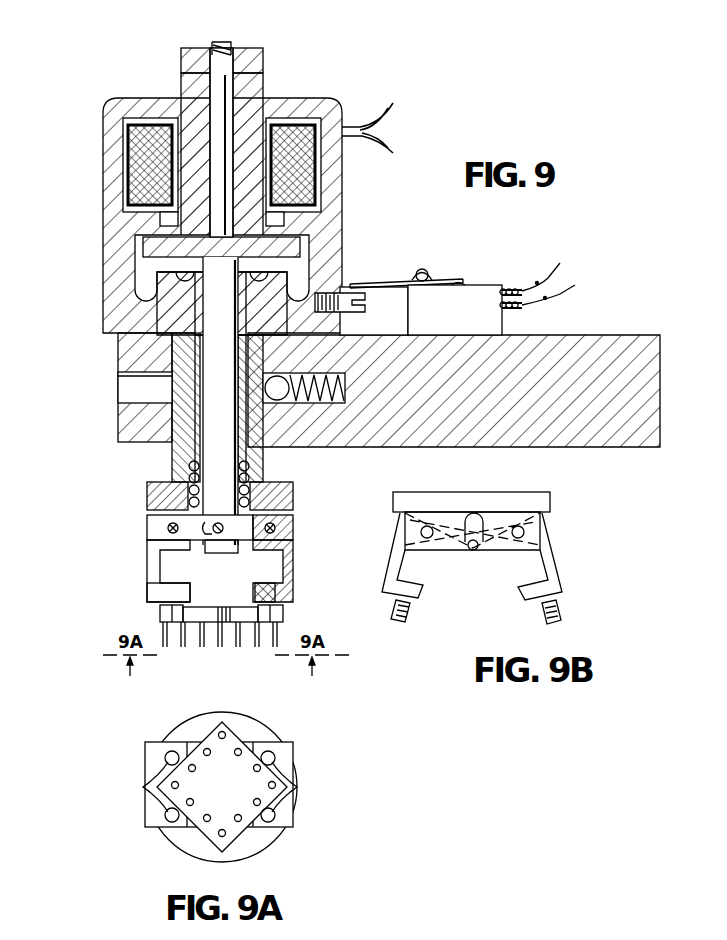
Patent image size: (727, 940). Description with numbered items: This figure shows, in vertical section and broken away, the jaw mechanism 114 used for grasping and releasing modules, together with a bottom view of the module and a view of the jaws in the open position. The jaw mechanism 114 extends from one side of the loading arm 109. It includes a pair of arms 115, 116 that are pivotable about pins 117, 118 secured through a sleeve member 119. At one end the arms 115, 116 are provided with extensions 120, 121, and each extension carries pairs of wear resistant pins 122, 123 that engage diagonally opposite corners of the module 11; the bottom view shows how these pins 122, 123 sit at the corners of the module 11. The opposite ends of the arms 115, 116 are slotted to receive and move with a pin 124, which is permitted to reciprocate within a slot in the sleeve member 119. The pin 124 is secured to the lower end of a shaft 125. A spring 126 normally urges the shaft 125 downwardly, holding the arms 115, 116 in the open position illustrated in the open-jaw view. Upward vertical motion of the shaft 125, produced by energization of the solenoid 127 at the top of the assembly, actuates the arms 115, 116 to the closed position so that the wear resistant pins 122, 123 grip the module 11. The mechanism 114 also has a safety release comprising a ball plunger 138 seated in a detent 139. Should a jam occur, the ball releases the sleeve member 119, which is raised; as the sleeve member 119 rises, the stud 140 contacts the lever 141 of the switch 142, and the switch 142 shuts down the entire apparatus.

In FIG. 9, the module 11 is at (215, 622).
In FIG. 9A, the module 11 is at (231, 796).
In FIG. 9, the loading arm 109 is at (612, 341).
In FIG. 9, the jaw mechanism 114 is at (100, 565).
In FIG. 9B, the jaw mechanism 114 is at (585, 570).
In FIG. 9, the arm 115 is at (148, 570).
In FIG. 9B, the arm 115 is at (394, 567).
In FIG. 9, the arm 116 is at (293, 567).
In FIG. 9B, the arm 116 is at (548, 555).
In FIG. 9, the pin 117 is at (168, 528).
In FIG. 9, the pin 118 is at (277, 528).
In FIG. 9, the sleeve member 119 is at (162, 500).
In FIG. 9B, the sleeve member 119 is at (545, 501).
In FIG. 9, the extension 120 is at (167, 592).
In FIG. 9B, the extension 120 is at (412, 594).
In FIG. 9, the extension 121 is at (277, 592).
In FIG. 9B, the extension 121 is at (528, 597).
In FIG. 9, the wear resistant pins 122 is at (165, 613).
In FIG. 9B, the wear resistant pins 122 is at (392, 614).
In FIG. 9A, the wear resistant pins 122 is at (143, 787).
In FIG. 9, the wear resistant pins 123 is at (278, 613).
In FIG. 9B, the wear resistant pins 123 is at (554, 614).
In FIG. 9A, the wear resistant pins 123 is at (297, 787).
In FIG. 9, the pin 124 is at (218, 545).
In FIG. 9B, the pin 124 is at (473, 552).
In FIG. 9, the shaft 125 is at (187, 468).
In FIG. 9, the spring 126 is at (183, 478).
In FIG. 9, the solenoid 127 is at (334, 97).
In FIG. 9, the ball plunger 138 is at (328, 403).
In FIG. 9, the detent 139 is at (277, 400).
In FIG. 9, the stud 140 is at (362, 306).
In FIG. 9, the lever 141 is at (381, 282).
In FIG. 9, the switch 142 is at (491, 284).